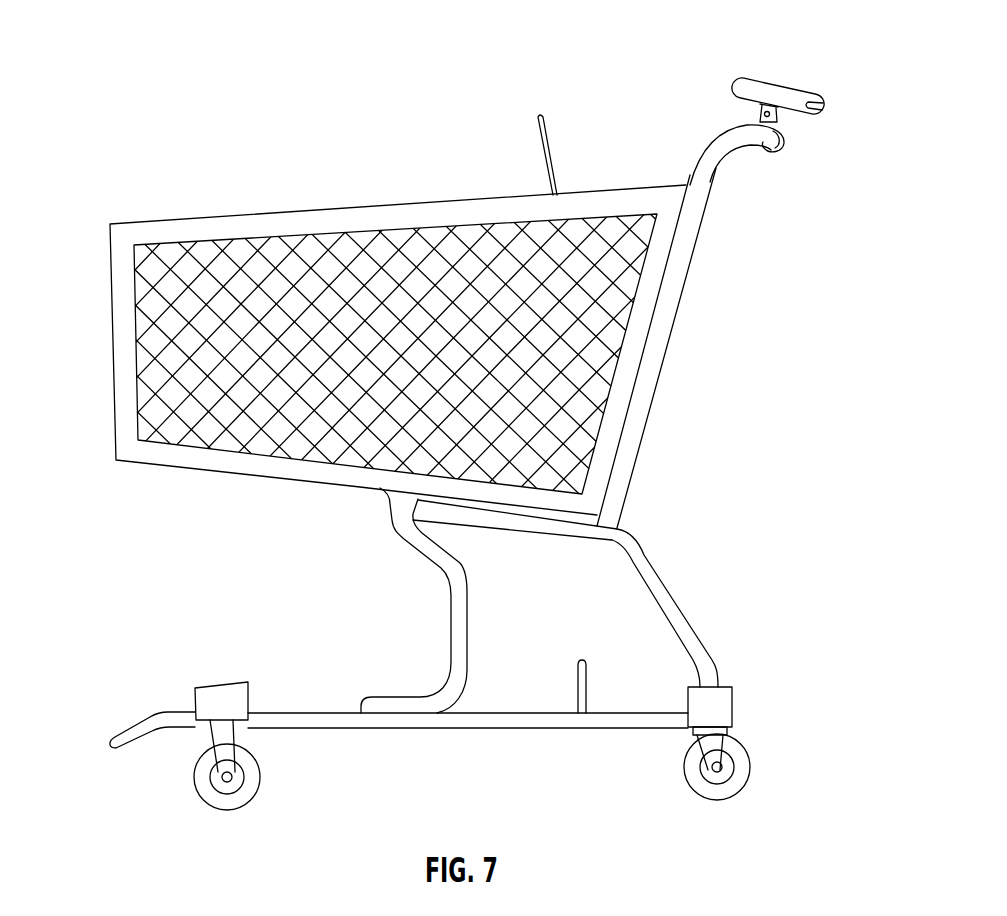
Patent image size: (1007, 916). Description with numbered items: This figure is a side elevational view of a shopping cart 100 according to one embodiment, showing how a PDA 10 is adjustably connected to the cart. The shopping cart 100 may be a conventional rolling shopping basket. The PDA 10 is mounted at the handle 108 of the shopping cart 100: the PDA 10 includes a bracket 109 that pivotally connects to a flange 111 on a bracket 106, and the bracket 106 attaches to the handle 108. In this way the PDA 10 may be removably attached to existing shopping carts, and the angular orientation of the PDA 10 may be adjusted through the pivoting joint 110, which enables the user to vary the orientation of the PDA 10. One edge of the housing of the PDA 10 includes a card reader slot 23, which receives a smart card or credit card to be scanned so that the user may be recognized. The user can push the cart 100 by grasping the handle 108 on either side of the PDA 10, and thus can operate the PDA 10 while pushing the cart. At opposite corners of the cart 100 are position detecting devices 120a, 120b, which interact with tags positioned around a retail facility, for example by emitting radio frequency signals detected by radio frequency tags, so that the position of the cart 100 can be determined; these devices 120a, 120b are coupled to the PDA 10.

The PDA 10 is at (780, 85).
The card reader slot 23 is at (821, 106).
The shopping cart 100 is at (471, 459).
The bracket 106 is at (783, 150).
The handle 108 is at (705, 170).
The bracket 109 is at (762, 107).
The pivoting joint 110 is at (760, 114).
The flange 111 is at (778, 125).
The position detecting device 120a is at (727, 686).
The position detecting device 120b is at (244, 683).